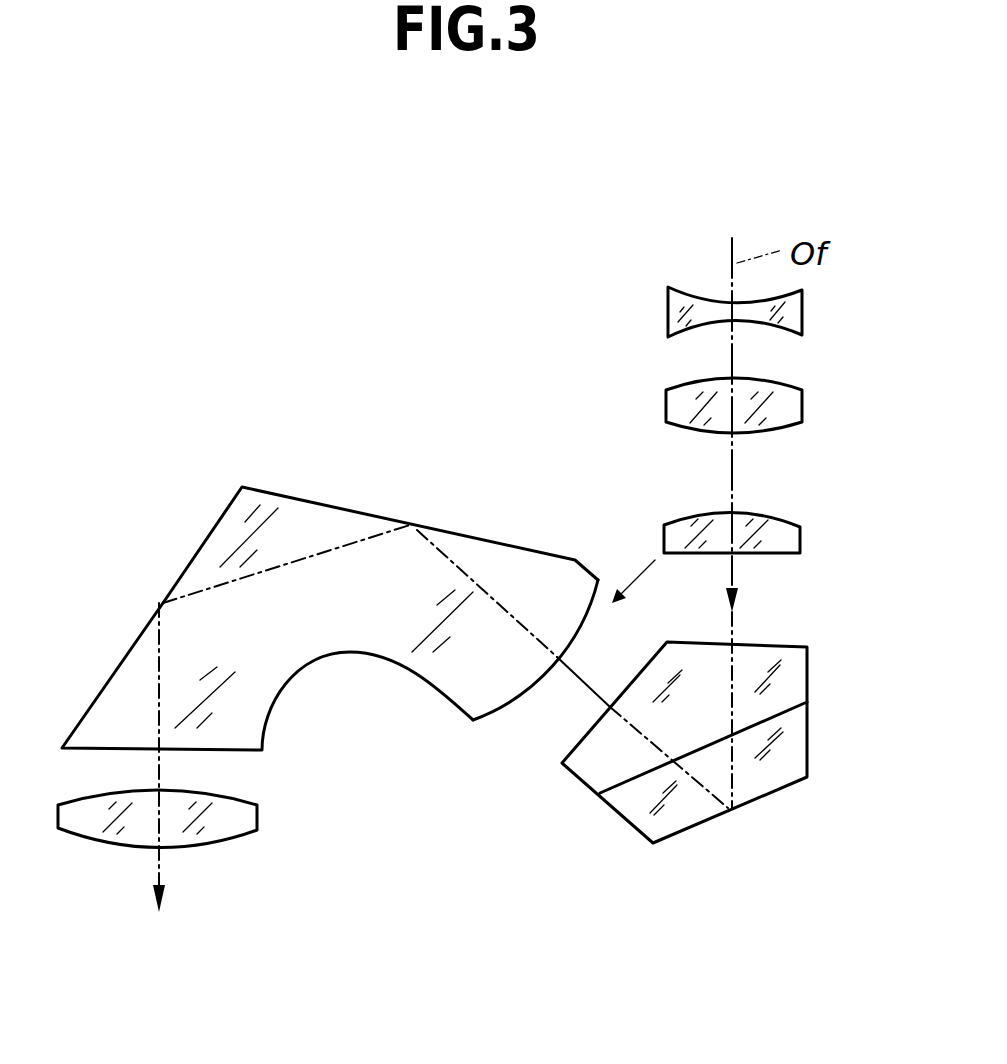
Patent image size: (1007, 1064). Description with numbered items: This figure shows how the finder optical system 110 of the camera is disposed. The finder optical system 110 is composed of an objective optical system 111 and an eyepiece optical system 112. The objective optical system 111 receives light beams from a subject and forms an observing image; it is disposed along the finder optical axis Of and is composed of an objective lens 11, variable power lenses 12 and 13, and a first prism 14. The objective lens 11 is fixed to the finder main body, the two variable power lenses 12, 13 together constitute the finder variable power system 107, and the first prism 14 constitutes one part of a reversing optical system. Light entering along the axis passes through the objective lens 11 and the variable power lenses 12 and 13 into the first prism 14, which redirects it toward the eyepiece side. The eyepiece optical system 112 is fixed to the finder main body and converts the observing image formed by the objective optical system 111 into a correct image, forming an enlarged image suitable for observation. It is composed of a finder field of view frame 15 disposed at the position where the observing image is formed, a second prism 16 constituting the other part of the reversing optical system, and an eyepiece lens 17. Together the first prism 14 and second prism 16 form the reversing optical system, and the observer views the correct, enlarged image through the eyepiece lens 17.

The objective lens 11 is at (668, 312).
The variable power lens 12 is at (666, 403).
The variable power lens 13 is at (664, 538).
The first prism 14 is at (807, 665).
The finder field of view frame 15 is at (505, 722).
The second prism 16 is at (330, 665).
The eyepiece lens 17 is at (222, 830).
The finder variable power system 107 is at (567, 373).
The finder optical system 110 is at (330, 393).
The objective optical system 111 is at (505, 362).
The eyepiece optical system 112 is at (170, 515).